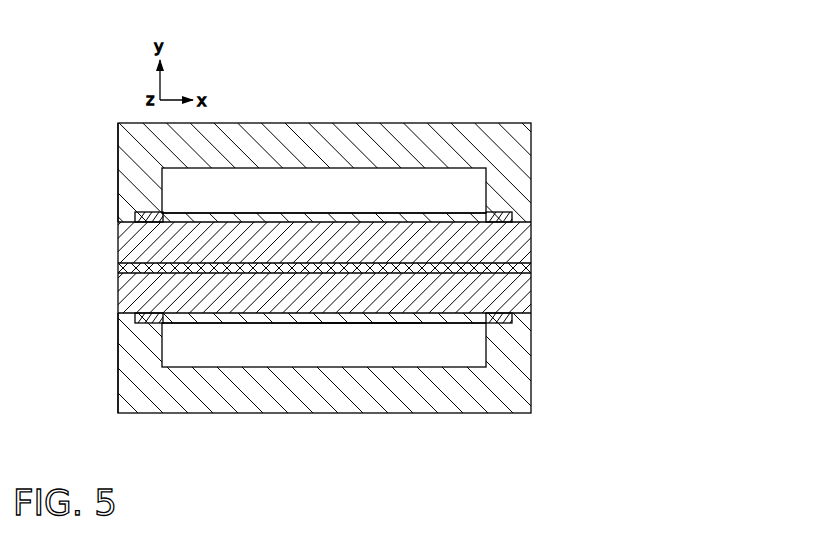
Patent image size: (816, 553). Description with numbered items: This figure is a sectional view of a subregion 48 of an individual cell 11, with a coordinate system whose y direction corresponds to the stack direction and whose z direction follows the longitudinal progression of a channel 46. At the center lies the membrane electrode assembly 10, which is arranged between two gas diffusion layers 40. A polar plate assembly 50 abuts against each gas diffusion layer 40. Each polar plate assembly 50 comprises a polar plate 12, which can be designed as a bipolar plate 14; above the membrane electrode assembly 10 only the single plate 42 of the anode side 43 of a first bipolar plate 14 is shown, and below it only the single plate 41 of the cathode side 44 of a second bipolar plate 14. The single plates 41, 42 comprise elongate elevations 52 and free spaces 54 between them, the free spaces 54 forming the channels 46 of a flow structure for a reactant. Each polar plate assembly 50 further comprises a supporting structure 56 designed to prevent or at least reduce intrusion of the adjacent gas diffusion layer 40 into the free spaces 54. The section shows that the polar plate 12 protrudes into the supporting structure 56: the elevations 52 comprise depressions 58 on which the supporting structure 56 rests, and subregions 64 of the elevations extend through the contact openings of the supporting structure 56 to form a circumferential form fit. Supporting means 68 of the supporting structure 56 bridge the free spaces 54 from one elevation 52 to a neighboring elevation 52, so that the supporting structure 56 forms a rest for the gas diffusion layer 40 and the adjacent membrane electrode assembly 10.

The membrane electrode assembly 10 is at (518, 268).
The individual cell 11 is at (380, 241).
The subregion 48 is at (513, 78).
The polar plate 12 is at (402, 330).
The bipolar plate 14 is at (402, 330).
The gas diffusion layer 40 is at (518, 242).
The single plate 41 is at (402, 382).
The single plate 42 is at (427, 208).
The anode side 43 is at (527, 208).
The cathode side 44 is at (527, 325).
The channel 46 is at (397, 269).
The free space 54 is at (455, 181).
The polar plate assembly 50 is at (533, 132).
The elevation 52 is at (138, 192).
The supporting structure 56 is at (323, 212).
The depression 58 is at (290, 382).
The subregion of the elevation 64 is at (135, 322).
The supporting means 68 is at (362, 323).